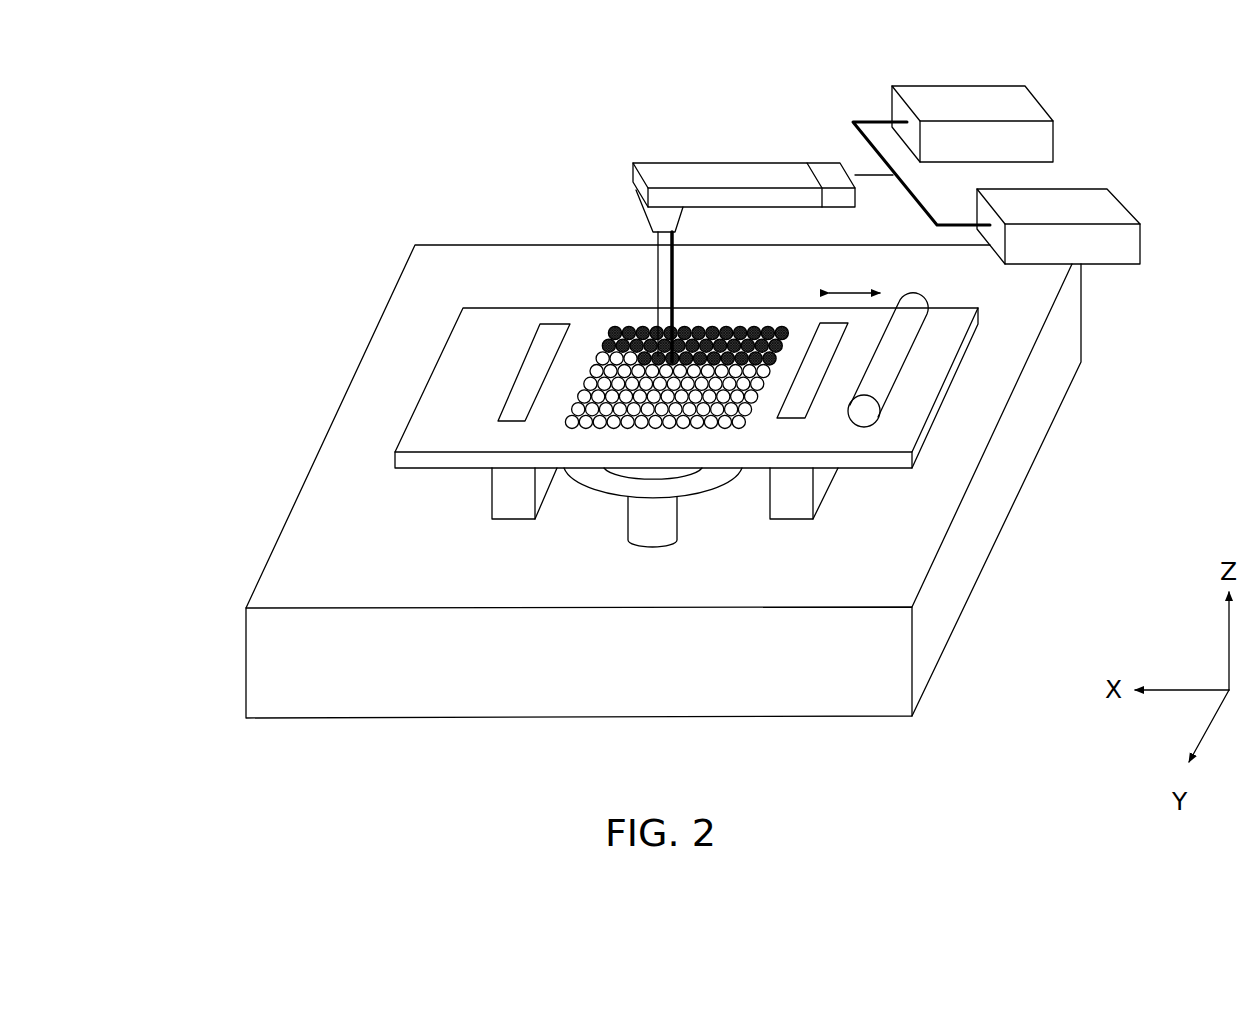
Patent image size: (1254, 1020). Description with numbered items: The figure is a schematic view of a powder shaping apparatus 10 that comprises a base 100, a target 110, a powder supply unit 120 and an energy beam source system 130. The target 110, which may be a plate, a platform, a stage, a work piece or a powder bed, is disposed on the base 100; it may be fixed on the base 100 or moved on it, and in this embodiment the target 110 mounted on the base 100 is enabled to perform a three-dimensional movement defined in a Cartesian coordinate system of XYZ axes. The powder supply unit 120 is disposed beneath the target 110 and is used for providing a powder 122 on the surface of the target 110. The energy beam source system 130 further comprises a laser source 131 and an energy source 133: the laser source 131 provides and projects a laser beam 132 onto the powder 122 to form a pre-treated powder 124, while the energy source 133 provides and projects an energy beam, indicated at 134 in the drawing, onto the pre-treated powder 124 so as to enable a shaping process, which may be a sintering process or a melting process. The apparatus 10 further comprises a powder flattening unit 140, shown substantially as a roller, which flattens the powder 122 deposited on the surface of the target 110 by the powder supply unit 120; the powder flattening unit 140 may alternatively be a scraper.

The powder shaping apparatus 10 is at (367, 145).
The base 100 is at (308, 480).
The target 110 is at (428, 378).
The powder supply unit 120 is at (503, 495).
The powder 122 is at (612, 421).
The pre-treated powder 124 is at (753, 333).
The energy beam source system 130 is at (720, 132).
The laser source 131 is at (1110, 207).
The laser beam 132 is at (656, 272).
The energy source 133 is at (1025, 105).
The probe 134 is at (675, 265).
The powder flattening unit 140 is at (900, 341).